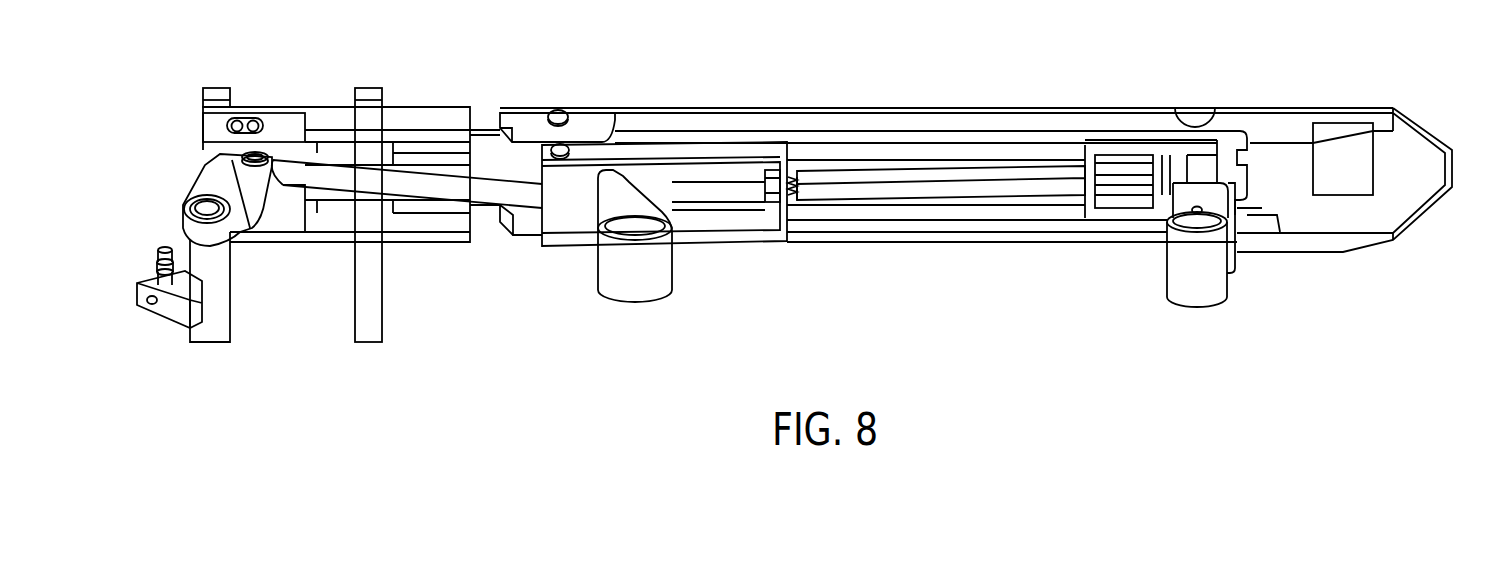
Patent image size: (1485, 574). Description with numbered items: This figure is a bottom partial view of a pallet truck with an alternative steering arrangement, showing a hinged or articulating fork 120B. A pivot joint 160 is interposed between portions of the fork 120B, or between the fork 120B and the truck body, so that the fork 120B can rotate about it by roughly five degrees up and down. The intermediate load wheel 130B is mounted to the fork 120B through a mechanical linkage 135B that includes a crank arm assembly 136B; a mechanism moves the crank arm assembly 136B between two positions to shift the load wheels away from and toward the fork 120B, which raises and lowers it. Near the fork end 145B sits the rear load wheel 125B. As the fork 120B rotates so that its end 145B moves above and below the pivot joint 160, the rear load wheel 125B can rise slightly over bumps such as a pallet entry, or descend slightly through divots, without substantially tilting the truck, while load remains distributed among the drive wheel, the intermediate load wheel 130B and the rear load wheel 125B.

The fork 120B is at (978, 243).
The rear load wheel 125B is at (1197, 292).
The intermediate load wheel 130B is at (641, 290).
The mechanical linkage 135B is at (153, 220).
The crank arm assembly 136B is at (481, 195).
The fork end 145B is at (1418, 128).
The pivot joint 160 is at (557, 110).